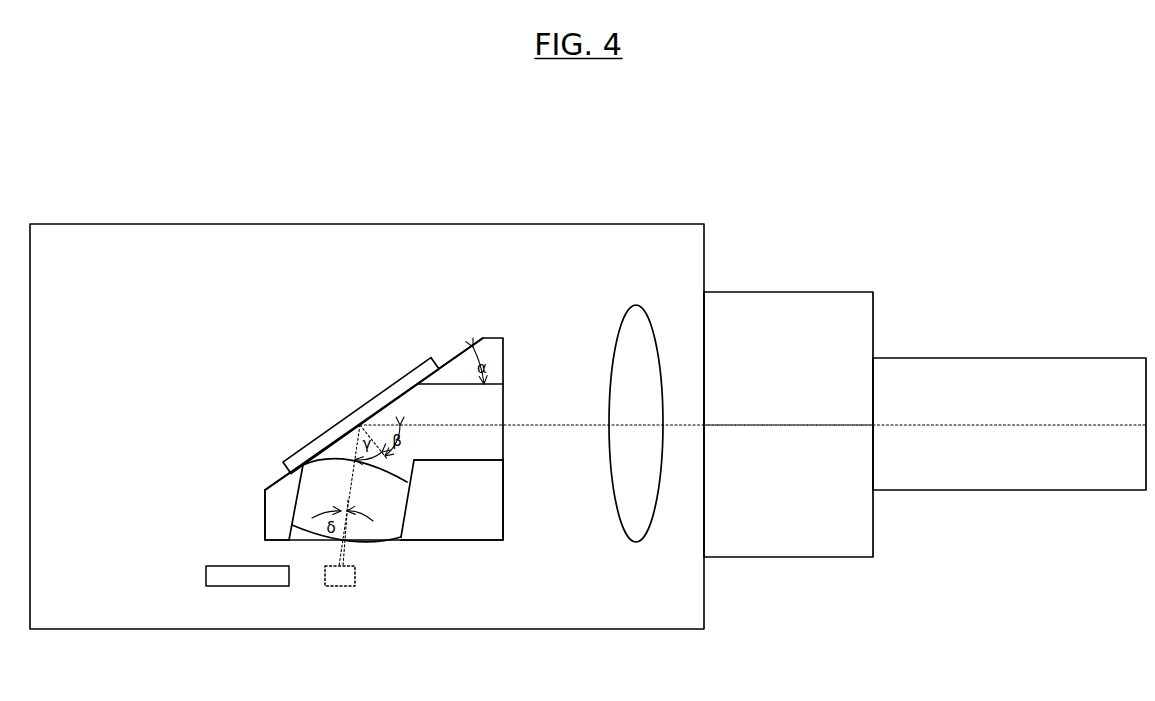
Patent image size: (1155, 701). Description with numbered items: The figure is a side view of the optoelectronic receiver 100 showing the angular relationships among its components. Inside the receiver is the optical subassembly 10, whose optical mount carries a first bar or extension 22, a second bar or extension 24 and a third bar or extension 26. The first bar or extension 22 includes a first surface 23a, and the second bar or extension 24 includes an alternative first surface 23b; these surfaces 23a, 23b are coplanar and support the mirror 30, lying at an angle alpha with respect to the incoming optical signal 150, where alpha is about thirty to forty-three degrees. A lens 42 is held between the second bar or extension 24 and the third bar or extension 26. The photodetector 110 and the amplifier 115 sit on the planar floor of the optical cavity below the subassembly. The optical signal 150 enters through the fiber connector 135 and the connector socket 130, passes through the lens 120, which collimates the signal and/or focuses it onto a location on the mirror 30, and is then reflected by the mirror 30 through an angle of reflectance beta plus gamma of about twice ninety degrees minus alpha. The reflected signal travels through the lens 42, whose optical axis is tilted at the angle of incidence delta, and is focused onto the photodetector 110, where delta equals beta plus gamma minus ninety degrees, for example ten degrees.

The optoelectronic receiver 100 is at (473, 153).
The optical subassembly 10 is at (233, 363).
The first bar or extension 22 is at (490, 345).
The first surface 23a is at (458, 352).
The alternative first surface 23b is at (267, 483).
The second bar or extension 24 is at (485, 513).
The third bar or extension 26 is at (273, 525).
The mirror 30 is at (358, 403).
The lens 42 is at (381, 527).
The photodetector 110 is at (342, 587).
The amplifier 115 is at (252, 587).
The lens 120 is at (636, 303).
The connector socket 130 is at (818, 307).
The fiber connector 135 is at (1027, 357).
The optical signal 150 is at (833, 427).